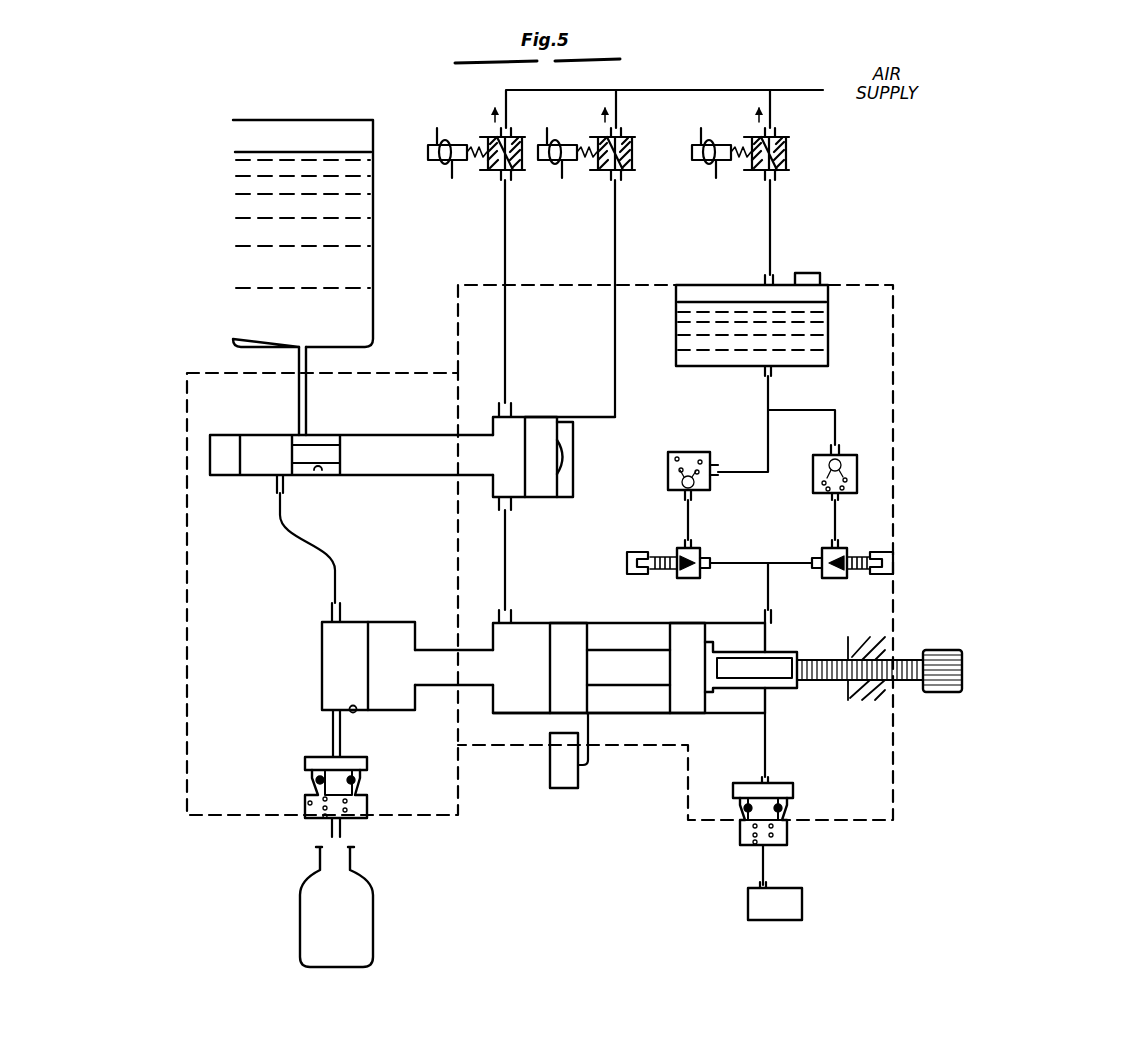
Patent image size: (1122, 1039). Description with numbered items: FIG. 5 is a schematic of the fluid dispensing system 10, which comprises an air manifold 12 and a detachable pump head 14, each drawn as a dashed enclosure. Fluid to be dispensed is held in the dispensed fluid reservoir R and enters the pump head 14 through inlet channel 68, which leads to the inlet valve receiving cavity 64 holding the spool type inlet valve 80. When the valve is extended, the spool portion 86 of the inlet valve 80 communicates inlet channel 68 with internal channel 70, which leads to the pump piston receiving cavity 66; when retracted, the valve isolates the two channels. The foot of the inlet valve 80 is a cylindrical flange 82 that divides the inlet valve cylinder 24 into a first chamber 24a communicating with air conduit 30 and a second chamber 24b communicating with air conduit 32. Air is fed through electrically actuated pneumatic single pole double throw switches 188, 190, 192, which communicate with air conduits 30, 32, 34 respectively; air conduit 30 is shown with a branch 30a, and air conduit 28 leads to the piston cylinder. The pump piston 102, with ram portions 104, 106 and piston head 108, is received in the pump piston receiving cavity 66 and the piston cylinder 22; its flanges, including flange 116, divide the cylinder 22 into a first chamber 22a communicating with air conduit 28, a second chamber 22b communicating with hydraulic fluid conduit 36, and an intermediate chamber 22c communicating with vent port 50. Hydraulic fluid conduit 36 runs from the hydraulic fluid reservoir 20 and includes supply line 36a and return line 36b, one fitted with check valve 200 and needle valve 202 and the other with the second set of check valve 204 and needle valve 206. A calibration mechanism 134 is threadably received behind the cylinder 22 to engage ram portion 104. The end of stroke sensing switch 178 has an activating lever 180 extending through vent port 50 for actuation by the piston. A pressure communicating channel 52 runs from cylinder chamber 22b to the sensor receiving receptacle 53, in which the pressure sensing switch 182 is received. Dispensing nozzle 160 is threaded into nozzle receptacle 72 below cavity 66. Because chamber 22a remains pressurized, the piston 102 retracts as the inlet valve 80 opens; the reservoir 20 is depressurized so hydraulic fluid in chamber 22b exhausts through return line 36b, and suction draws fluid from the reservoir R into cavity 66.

The fluid dispensing system 10 is at (263, 95).
The dispensed fluid reservoir R is at (233, 162).
The pneumatic single pole double throw switch 188 is at (474, 142).
The pneumatic single pole double throw switch 190 is at (584, 144).
The pneumatic single pole double throw switch 192 is at (738, 147).
The air conducting conduit 30 is at (507, 246).
The air conducting conduit 32 is at (617, 240).
The air conducting conduit 34 is at (772, 226).
The air manifold 12 is at (888, 280).
The detachable pump head 14 is at (181, 788).
The hydraulic fluid reservoir 20 is at (830, 318).
The hydraulic fluid conducting conduit 36 is at (766, 394).
The supply line 36a is at (838, 514).
The return line 36b is at (688, 514).
The spool type inlet valve 80 is at (230, 450).
The inlet channel 68 is at (298, 411).
The spool portion 86 is at (320, 445).
The inlet valve receiving cavity 64 is at (318, 472).
The internal channel 70 is at (318, 554).
The inlet valve cylinder 24 is at (519, 412).
The first chamber 24a is at (497, 426).
The second chamber 24b is at (570, 452).
The cylindrical flange 82 is at (545, 417).
The air line branch 30a is at (511, 493).
The air conducting conduit 28 is at (511, 543).
The check valve 204 is at (710, 488).
The check valve 200 is at (858, 470).
The needle valve 206 is at (681, 550).
The needle valve 202 is at (858, 560).
The piston head 108 is at (393, 617).
The pump piston 102 is at (356, 670).
The pump piston receiving cavity 66 is at (356, 713).
The nozzle receptacle 72 is at (305, 804).
The dispensing nozzle 160 is at (318, 821).
The piston cylinder 22 is at (633, 620).
The first chamber 22a is at (527, 701).
The second chamber 22b is at (727, 636).
The intermediate chamber 22c is at (652, 701).
The ram portion 106 is at (530, 640).
The vent port 50 is at (590, 714).
The ram portion 104 is at (641, 692).
The flange 116 is at (691, 623).
The calibration mechanism 134 is at (928, 648).
The activating lever 180 is at (589, 754).
The end of stroke sensing switch 178 is at (556, 790).
The pressure communicating channel 52 is at (767, 751).
The sensor receiving receptacle 53 is at (781, 784).
The pressure sensing switch 182 is at (803, 911).